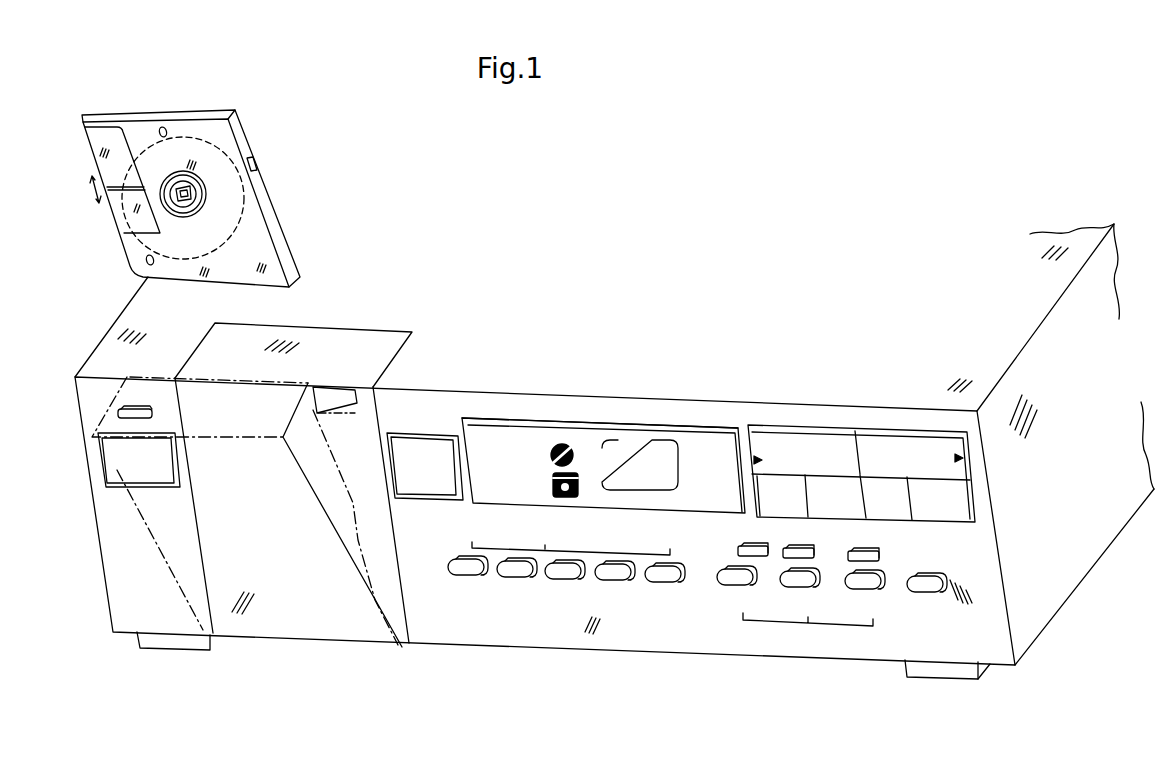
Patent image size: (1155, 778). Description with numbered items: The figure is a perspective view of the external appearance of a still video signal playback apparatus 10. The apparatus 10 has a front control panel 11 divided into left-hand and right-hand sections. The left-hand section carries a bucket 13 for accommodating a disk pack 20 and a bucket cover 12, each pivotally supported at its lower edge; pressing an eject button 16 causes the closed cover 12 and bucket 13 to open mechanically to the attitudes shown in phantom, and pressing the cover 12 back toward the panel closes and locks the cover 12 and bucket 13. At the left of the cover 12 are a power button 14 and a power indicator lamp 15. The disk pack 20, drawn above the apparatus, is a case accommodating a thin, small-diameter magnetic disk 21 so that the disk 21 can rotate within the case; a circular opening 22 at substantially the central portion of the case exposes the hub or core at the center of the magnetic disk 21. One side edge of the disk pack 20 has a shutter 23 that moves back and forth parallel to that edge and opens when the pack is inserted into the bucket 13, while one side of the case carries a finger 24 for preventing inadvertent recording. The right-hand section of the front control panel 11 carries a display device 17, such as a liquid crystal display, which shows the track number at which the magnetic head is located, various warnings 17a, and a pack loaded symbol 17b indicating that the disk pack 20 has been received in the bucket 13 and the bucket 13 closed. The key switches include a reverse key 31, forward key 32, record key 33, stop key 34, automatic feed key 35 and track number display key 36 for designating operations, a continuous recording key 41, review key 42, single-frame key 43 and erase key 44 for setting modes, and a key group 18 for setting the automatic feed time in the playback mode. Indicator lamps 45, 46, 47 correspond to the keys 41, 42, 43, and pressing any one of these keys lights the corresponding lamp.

The still video signal playback apparatus 10 is at (812, 283).
The front control panel 11 is at (468, 397).
The bucket cover 12 is at (383, 337).
The bucket 13 is at (335, 418).
The power button 14 is at (100, 470).
The power indicator lamp 15 is at (117, 413).
The eject button 16 is at (425, 497).
The display device 17 is at (545, 432).
The warnings 17a is at (565, 450).
The pack loaded symbol 17b is at (553, 488).
The automatic feed time key group 18 is at (526, 585).
The disk pack 20 is at (250, 127).
The magnetic disk 21 is at (192, 140).
The circular opening 22 is at (190, 213).
The shutter 23 is at (124, 222).
The finger 24 is at (257, 165).
The reverse key 31 is at (806, 437).
The forward key 32 is at (886, 440).
The record key 33 is at (758, 514).
The stop key 34 is at (863, 512).
The automatic feed key 35 is at (904, 516).
The track number display key 36 is at (960, 517).
The continuous recording key 41 is at (718, 579).
The review key 42 is at (790, 578).
The single-frame key 43 is at (855, 577).
The erase key 44 is at (945, 579).
The indicator lamp 45 is at (738, 549).
The indicator lamp 46 is at (800, 548).
The indicator lamp 47 is at (858, 551).